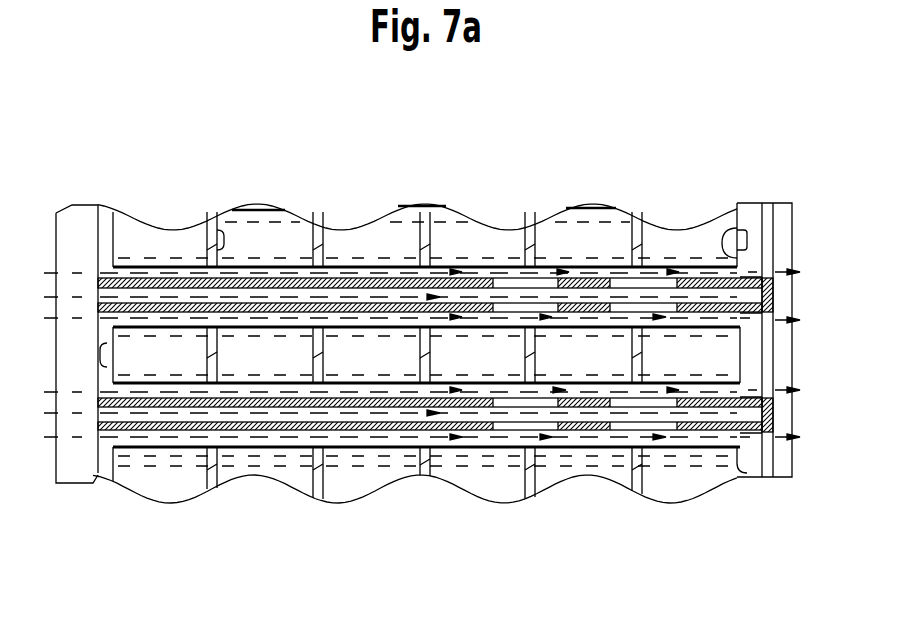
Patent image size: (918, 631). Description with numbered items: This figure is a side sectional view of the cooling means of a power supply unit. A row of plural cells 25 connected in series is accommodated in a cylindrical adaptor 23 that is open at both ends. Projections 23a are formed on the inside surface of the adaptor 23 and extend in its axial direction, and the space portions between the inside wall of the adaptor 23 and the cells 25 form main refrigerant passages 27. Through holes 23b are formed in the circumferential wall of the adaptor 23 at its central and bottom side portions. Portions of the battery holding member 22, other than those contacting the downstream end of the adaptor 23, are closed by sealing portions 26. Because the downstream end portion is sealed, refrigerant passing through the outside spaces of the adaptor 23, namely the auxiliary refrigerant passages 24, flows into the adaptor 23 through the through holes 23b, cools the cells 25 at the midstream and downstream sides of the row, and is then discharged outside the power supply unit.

The battery holding member 22 is at (778, 473).
The cylindrical adaptor 23 is at (98, 375).
The projections 23a is at (197, 440).
The through holes 23b is at (636, 375).
The auxiliary refrigerant passages 24 is at (297, 294).
The cells 25 is at (465, 347).
The sealing portions 26 is at (727, 226).
The main refrigerant passages 27 is at (187, 322).